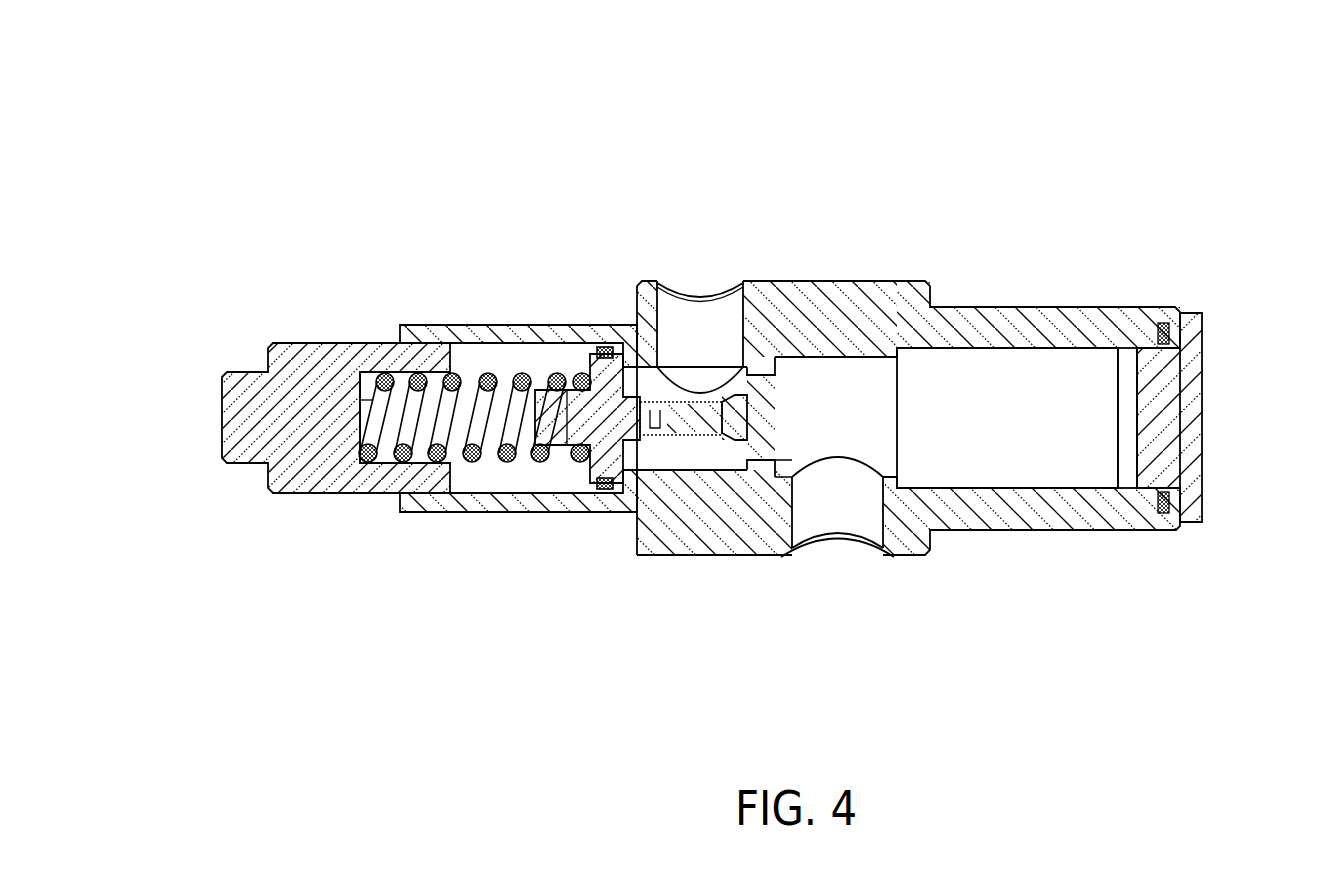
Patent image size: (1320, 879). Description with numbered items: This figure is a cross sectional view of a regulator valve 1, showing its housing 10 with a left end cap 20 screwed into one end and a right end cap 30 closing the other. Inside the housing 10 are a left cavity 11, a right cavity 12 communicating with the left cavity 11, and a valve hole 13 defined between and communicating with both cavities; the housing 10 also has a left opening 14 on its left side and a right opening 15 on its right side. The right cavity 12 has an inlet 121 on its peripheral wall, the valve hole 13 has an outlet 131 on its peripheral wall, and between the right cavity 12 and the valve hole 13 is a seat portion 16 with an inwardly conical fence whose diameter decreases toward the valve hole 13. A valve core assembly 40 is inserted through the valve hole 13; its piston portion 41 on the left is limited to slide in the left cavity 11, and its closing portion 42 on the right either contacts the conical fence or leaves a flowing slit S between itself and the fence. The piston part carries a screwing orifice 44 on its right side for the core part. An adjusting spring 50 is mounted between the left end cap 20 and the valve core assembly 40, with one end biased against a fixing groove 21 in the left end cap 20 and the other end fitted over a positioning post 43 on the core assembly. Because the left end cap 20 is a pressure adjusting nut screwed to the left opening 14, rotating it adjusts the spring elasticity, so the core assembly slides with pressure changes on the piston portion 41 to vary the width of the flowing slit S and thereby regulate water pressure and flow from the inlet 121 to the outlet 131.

The regulator valve 1 is at (733, 342).
The housing 10 is at (878, 276).
The left cavity 11 is at (523, 472).
The right cavity 12 is at (1038, 455).
The inlet 121 is at (842, 508).
The valve hole 13 is at (705, 453).
The outlet 131 is at (700, 332).
The left opening 14 is at (490, 472).
The right opening 15 is at (1127, 486).
The seat portion 16 is at (786, 356).
The left end cap 20 is at (214, 412).
The fixing groove 21 is at (372, 398).
The right end cap 30 is at (1208, 395).
The valve core assembly 40 is at (540, 383).
The piston portion 41 is at (603, 347).
The closing portion 42 is at (776, 420).
The positioning post 43 is at (553, 470).
The screwing orifice 44 is at (655, 437).
The adjusting spring 50 is at (482, 370).
The flowing slit S is at (787, 480).